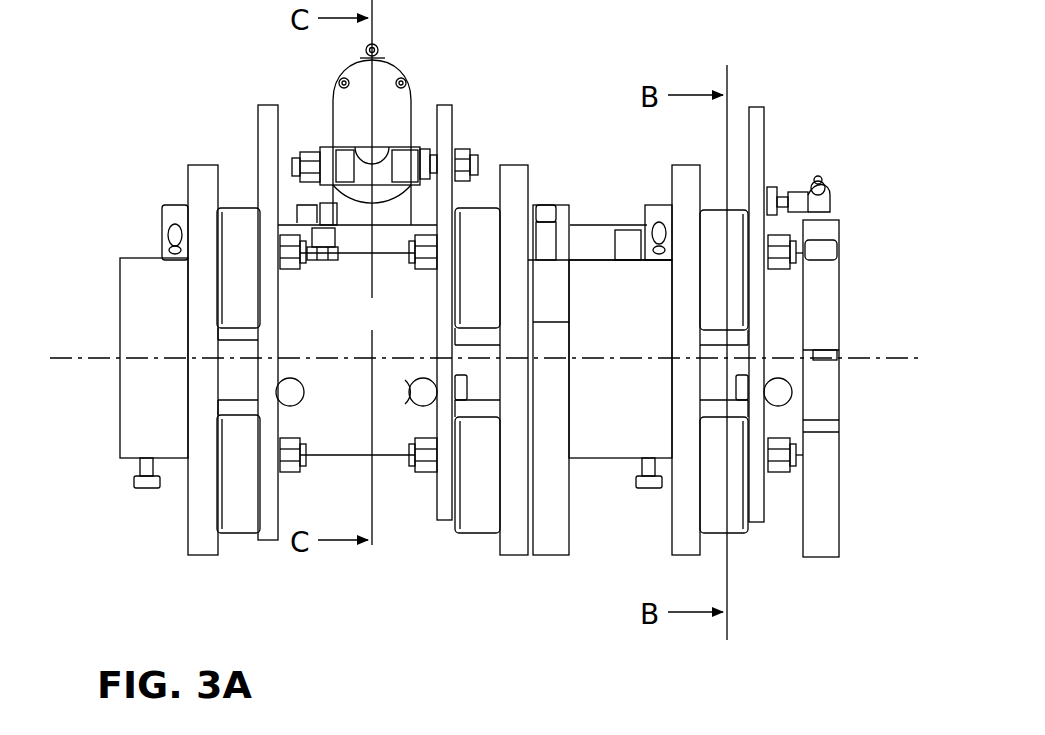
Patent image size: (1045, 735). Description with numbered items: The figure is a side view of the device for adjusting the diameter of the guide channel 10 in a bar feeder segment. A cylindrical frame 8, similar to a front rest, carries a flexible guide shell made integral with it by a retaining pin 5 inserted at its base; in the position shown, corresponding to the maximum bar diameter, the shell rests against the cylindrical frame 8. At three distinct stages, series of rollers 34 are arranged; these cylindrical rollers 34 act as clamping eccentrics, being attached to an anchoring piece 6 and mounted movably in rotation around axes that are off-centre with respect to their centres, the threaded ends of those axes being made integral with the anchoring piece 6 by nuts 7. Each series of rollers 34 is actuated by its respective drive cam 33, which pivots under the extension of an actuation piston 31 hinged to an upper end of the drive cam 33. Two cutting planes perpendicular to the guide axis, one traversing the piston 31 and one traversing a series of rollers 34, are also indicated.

The retaining pin 5 is at (148, 490).
The anchoring piece 6 is at (268, 114).
The nuts 7 is at (420, 438).
The cylindrical frame 8 is at (121, 456).
The guide channel 10 is at (104, 374).
The actuation piston 31 is at (385, 76).
The drive cam 33 is at (204, 182).
The rollers 34 is at (243, 552).